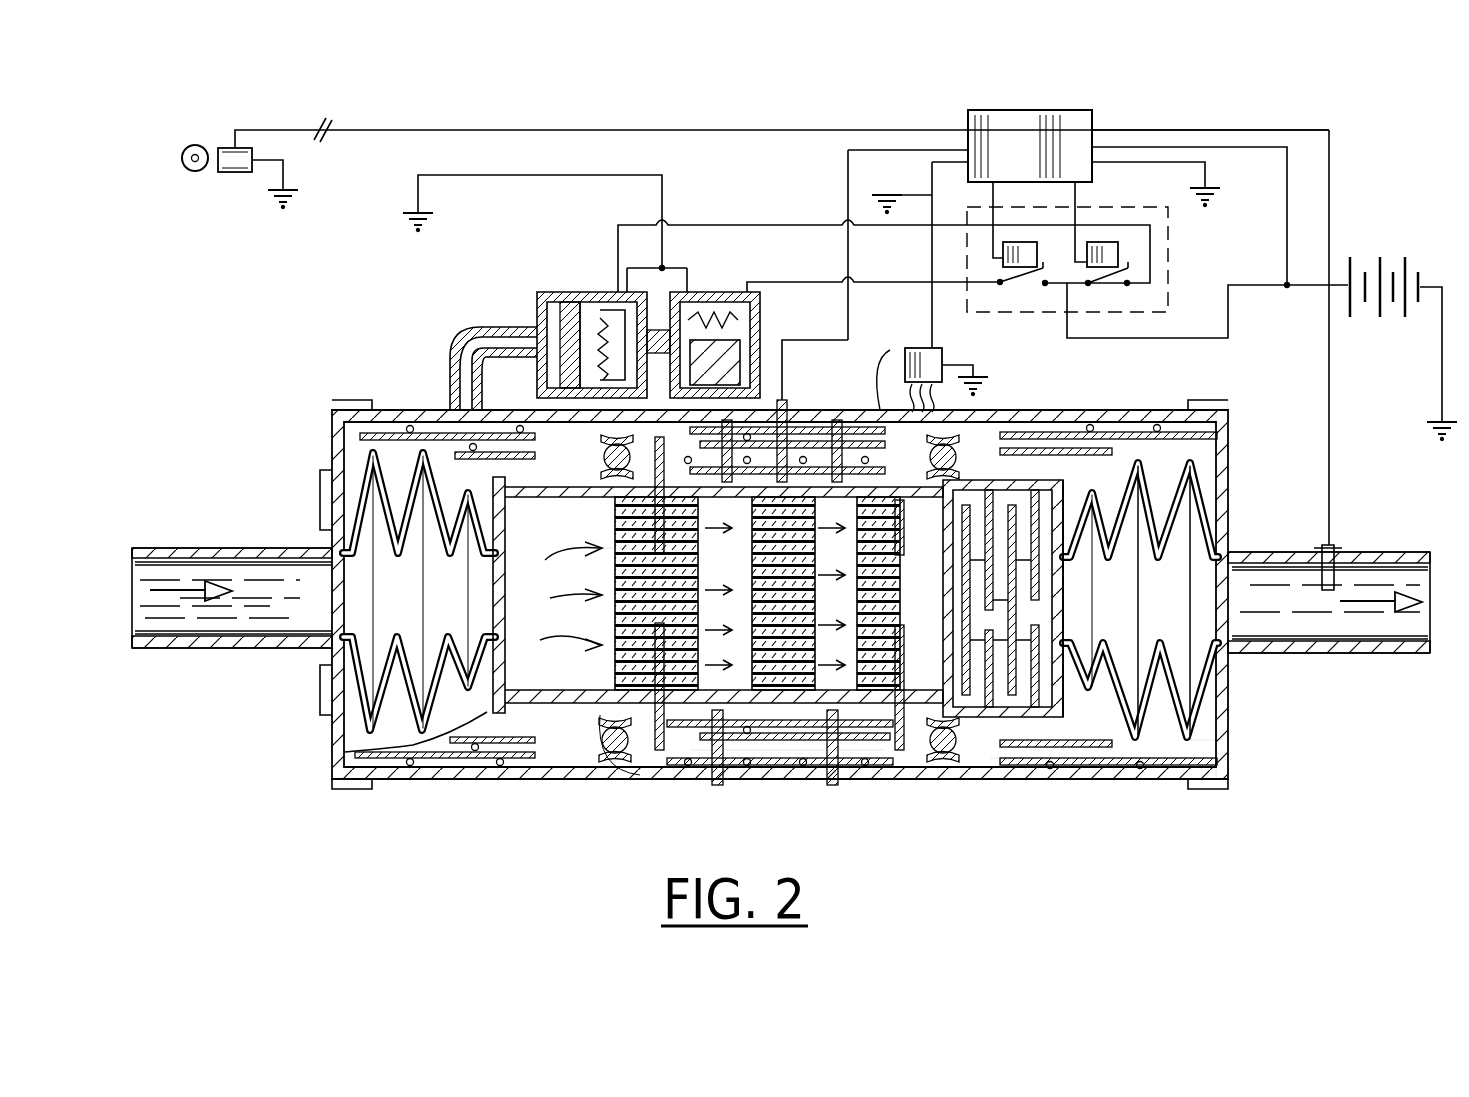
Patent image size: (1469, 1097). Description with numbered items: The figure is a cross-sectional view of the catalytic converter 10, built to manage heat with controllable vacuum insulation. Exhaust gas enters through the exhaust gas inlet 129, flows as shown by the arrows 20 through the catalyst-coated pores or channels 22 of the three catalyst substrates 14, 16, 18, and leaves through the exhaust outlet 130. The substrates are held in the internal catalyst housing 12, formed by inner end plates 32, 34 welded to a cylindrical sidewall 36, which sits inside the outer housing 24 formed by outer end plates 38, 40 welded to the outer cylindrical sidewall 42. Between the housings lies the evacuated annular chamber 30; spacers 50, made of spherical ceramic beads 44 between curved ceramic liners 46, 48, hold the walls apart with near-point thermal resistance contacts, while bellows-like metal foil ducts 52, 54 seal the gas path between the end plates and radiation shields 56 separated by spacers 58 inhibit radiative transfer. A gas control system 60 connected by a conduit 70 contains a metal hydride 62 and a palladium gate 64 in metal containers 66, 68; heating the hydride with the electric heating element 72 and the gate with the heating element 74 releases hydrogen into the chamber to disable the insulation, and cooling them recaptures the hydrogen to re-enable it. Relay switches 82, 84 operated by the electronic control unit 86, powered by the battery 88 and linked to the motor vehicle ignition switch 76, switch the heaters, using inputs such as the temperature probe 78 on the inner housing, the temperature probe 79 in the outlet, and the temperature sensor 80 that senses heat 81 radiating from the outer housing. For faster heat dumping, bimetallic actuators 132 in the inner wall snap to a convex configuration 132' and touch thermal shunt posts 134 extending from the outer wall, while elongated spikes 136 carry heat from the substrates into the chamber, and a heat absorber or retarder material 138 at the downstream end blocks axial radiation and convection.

The catalytic converter 10 is at (356, 387).
The internal catalyst housing 12 is at (640, 702).
The catalyst substrate 14 is at (592, 702).
The catalyst substrate 16 is at (760, 702).
The catalyst substrate 18 is at (830, 702).
The arrows 20 is at (190, 592).
The catalyst-coated pores or channels 22 is at (612, 547).
The outer housing 24 is at (397, 780).
The annular chamber 30 is at (480, 489).
The inner end plate 32 is at (350, 752).
The inner end plate 34 is at (1060, 562).
The cylindrical sidewall 36 is at (1015, 502).
The outer end plate 38 is at (332, 717).
The outer end plate 40 is at (1228, 417).
The outer cylindrical sidewall 42 is at (1160, 412).
The spherical ceramic beads 44 is at (960, 752).
The curved ceramic liner 46 is at (958, 762).
The curved ceramic liner 48 is at (1100, 772).
The spacers 50 is at (930, 767).
The metal foil duct 52 is at (370, 477).
The metal foil duct 54 is at (1200, 480).
The radiation shields 56 is at (1200, 767).
The spacers 58 is at (1215, 742).
The gas control system 60 is at (548, 292).
The metal hydride 62 is at (745, 347).
The palladium gate 64 is at (560, 312).
The metal container 66 is at (758, 312).
The metal container 68 is at (560, 324).
The conduit 70 is at (462, 347).
The electric heating element 72 is at (708, 312).
The heating element 74 is at (612, 302).
The motor vehicle ignition switch 76 is at (238, 172).
The temperature probe 78 is at (795, 402).
The temperature probe 79 is at (1336, 548).
The temperature sensor 80 is at (942, 354).
The heat 81 is at (940, 407).
The relay switch 82 is at (1120, 257).
The relay switch 84 is at (1040, 242).
The electronic control unit 86 is at (1100, 120).
The battery 88 is at (1372, 267).
The exhaust gas inlet 129 is at (220, 548).
The exhaust outlet 130 is at (1305, 647).
The bimetallic actuators 132 is at (814, 643).
The convex configuration 132' is at (722, 736).
The thermal shunt posts 134 is at (840, 692).
The elongated spikes 136 is at (882, 402).
The heat absorber or retarder material 138 is at (1160, 692).